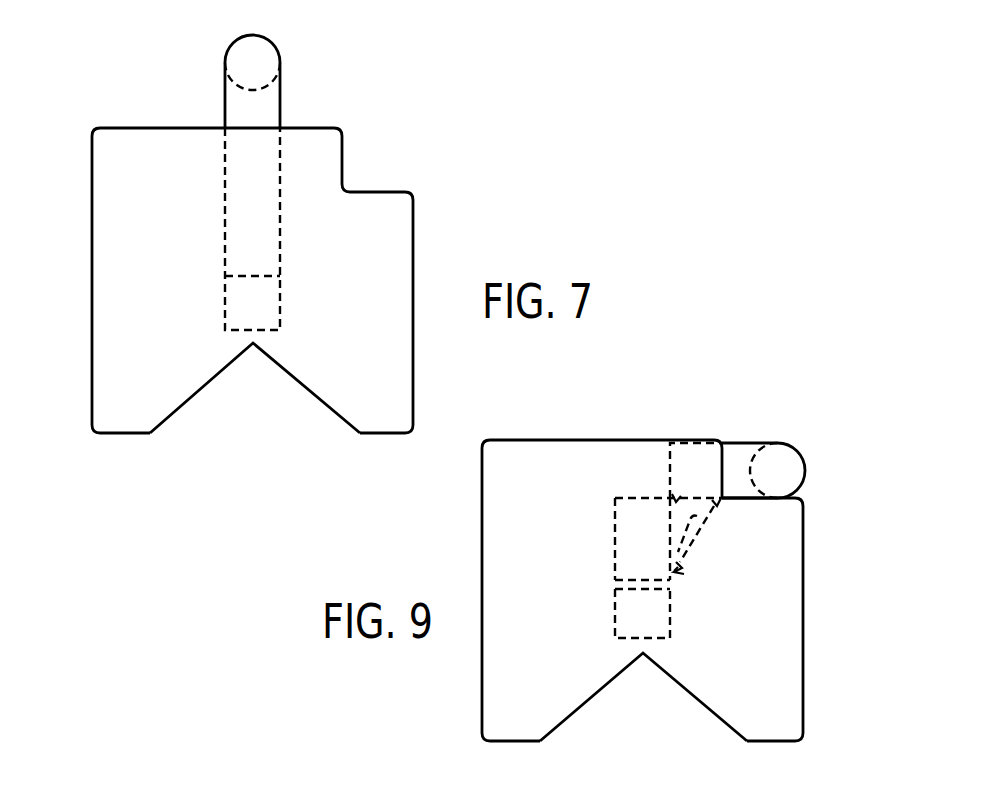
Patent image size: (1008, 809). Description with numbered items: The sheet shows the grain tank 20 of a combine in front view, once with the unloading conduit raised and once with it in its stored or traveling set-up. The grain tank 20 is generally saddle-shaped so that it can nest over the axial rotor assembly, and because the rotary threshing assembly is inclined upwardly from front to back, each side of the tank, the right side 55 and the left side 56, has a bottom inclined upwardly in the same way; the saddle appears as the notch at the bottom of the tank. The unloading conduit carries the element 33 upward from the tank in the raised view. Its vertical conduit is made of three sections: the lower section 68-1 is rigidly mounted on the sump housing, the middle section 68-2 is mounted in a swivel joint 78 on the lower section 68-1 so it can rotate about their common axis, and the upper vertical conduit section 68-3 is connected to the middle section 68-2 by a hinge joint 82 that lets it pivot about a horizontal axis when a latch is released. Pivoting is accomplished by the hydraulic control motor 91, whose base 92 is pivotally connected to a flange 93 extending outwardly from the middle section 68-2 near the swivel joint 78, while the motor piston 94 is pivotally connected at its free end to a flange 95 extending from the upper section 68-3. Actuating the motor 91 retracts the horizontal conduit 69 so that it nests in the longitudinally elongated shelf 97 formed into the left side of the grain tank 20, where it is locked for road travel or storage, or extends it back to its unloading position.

In FIG. 7, the grain tank 20 is at (108, 218).
In FIG. 9, the grain tank 20 is at (493, 490).
In FIG. 7, the locking pin 33 is at (197, 112).
In FIG. 7, the right side of the tank 55 is at (115, 380).
In FIG. 9, the right side of the tank 55 is at (500, 692).
In FIG. 7, the left side of the tank 56 is at (393, 247).
In FIG. 9, the left side of the tank 56 is at (788, 697).
In FIG. 9, the horizontal conduit 69 is at (802, 458).
In FIG. 9, the shelf 97 is at (790, 497).
In FIG. 9, the lower section 68-1 is at (617, 622).
In FIG. 9, the middle section 68-2 is at (616, 548).
In FIG. 9, the upper vertical conduit section 68-3 is at (737, 450).
In FIG. 9, the swivel joint 78 is at (613, 587).
In FIG. 9, the hinge joint 82 is at (672, 496).
In FIG. 9, the hydraulic control motor 91 is at (715, 522).
In FIG. 9, the base 92 is at (684, 572).
In FIG. 9, the flange 93 is at (680, 575).
In FIG. 9, the motor piston 94 is at (718, 510).
In FIG. 9, the flange 95 is at (722, 504).